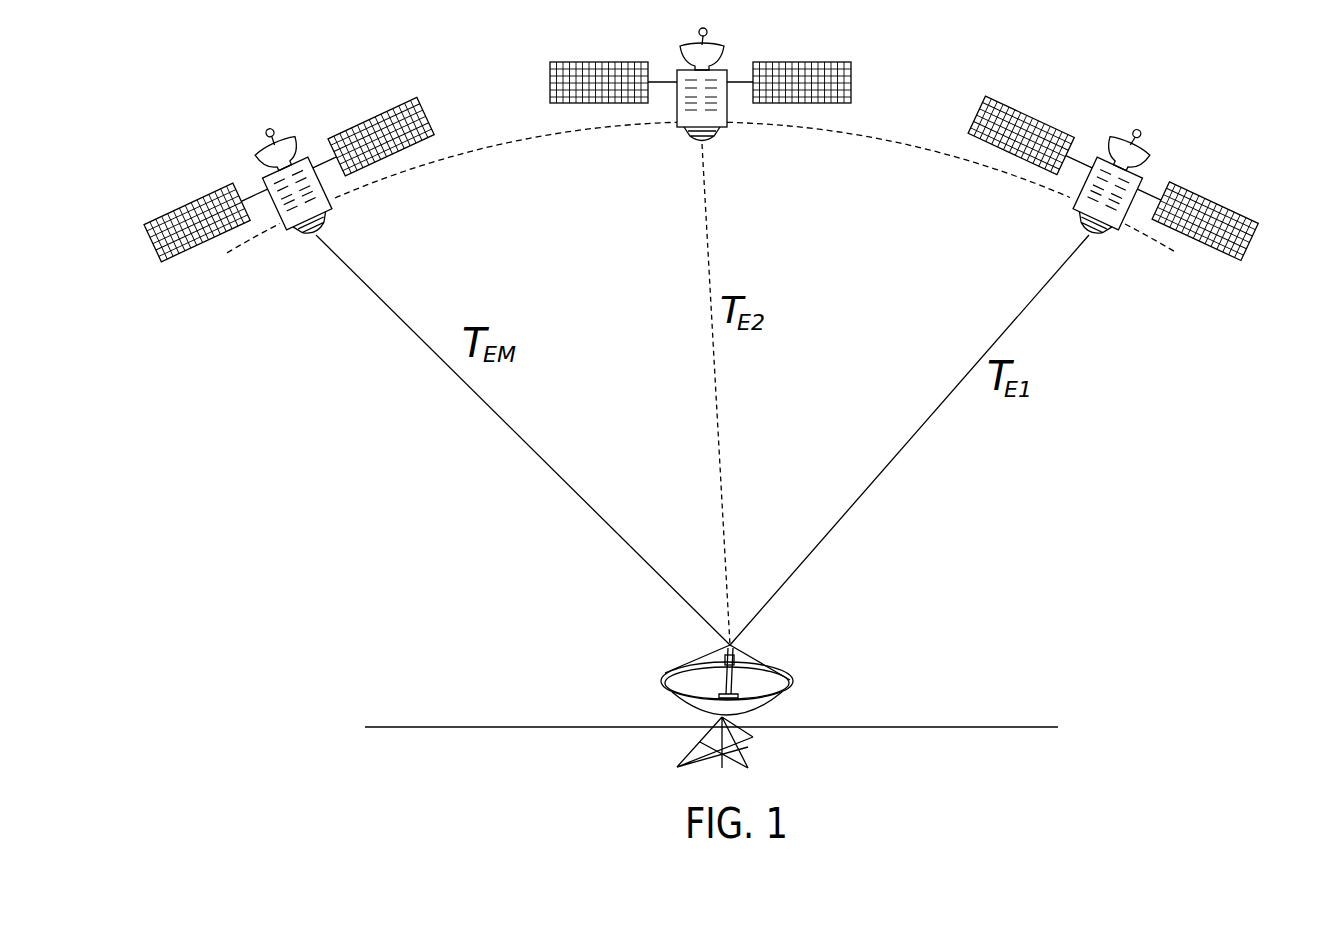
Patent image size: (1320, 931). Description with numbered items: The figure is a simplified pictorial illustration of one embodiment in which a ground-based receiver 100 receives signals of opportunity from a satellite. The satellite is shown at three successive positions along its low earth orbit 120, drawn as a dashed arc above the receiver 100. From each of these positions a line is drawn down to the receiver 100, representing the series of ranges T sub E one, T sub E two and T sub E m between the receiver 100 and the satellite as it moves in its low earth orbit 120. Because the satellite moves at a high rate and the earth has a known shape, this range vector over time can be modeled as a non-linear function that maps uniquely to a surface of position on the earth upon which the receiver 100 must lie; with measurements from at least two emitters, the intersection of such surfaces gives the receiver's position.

The receiver 100 is at (793, 681).
The low earth orbit 120 is at (898, 143).